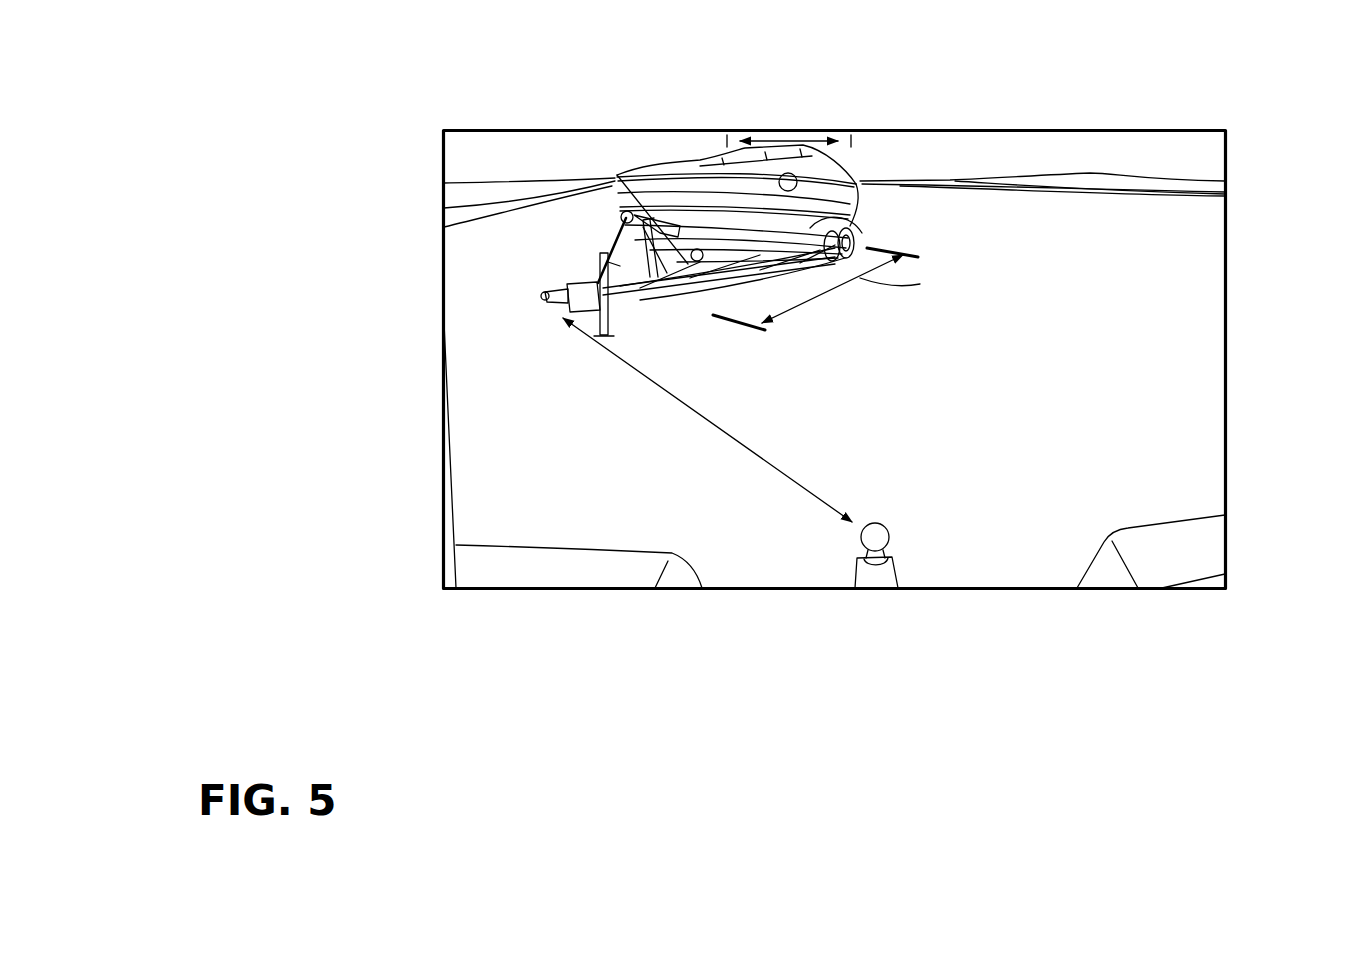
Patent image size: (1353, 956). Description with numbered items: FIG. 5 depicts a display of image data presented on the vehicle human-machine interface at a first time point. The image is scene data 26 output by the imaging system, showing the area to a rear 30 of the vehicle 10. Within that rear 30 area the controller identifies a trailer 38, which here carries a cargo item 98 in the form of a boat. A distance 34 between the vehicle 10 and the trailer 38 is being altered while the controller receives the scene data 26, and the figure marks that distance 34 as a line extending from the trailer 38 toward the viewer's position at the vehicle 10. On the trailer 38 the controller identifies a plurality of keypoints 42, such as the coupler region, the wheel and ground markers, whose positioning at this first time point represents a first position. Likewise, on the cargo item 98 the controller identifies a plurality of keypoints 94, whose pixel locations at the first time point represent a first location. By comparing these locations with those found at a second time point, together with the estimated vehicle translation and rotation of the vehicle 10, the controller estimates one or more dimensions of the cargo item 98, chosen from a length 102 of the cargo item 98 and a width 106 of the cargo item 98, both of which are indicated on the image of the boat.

The vehicle 10 is at (1187, 513).
The scene data 26 is at (1168, 353).
The rear 30 is at (974, 344).
The distance 34 is at (747, 452).
The trailer 38 is at (600, 243).
The keypoints 42 is at (555, 294).
The keypoints 94 is at (613, 177).
The cargo item 98 is at (661, 151).
The length 102 is at (858, 281).
The width 106 is at (776, 140).